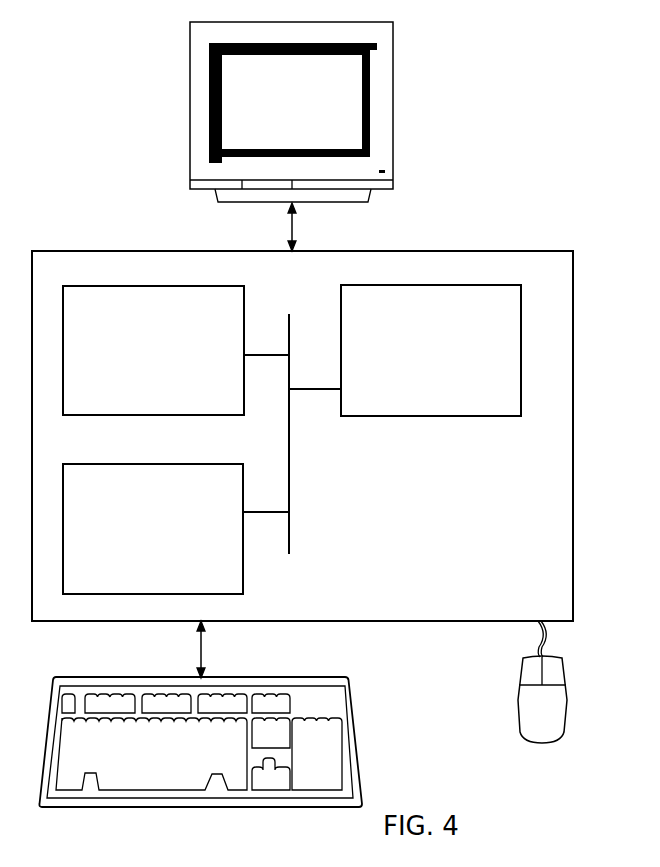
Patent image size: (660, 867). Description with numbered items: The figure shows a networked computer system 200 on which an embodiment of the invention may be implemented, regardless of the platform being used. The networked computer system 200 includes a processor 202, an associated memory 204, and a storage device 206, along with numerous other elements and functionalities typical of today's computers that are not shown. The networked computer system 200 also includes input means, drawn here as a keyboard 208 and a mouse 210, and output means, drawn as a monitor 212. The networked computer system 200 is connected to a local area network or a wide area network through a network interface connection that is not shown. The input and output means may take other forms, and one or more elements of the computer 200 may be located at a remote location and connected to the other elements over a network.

The networked computer system 200 is at (589, 132).
The processor 202 is at (462, 361).
The memory 204 is at (169, 360).
The storage device 206 is at (166, 537).
The keyboard 208 is at (161, 772).
The mouse 210 is at (559, 719).
The monitor 212 is at (308, 116).